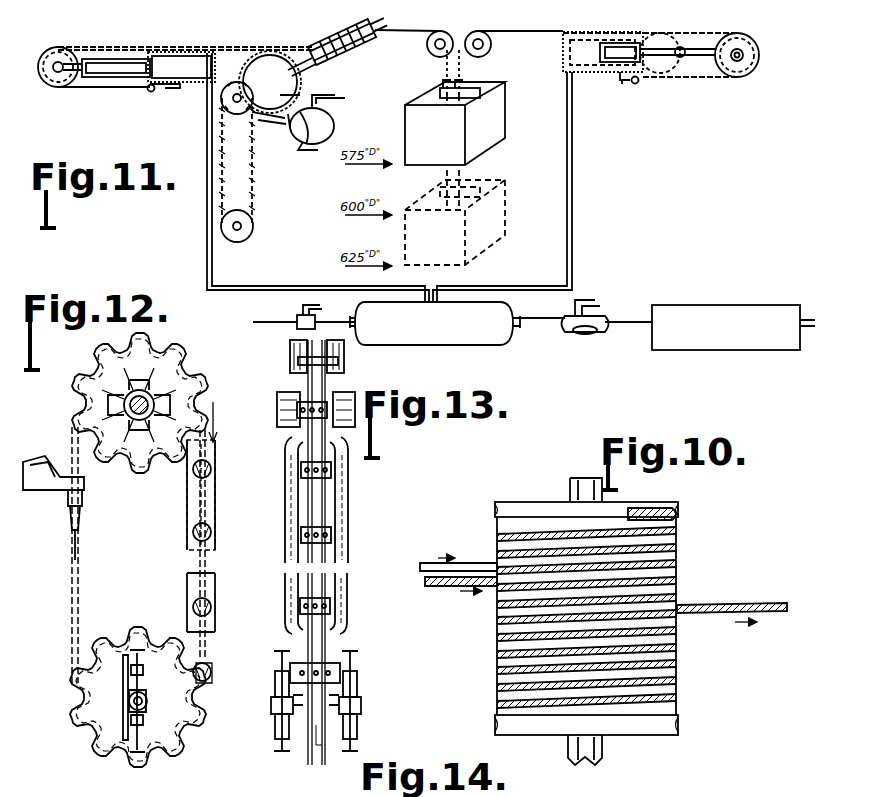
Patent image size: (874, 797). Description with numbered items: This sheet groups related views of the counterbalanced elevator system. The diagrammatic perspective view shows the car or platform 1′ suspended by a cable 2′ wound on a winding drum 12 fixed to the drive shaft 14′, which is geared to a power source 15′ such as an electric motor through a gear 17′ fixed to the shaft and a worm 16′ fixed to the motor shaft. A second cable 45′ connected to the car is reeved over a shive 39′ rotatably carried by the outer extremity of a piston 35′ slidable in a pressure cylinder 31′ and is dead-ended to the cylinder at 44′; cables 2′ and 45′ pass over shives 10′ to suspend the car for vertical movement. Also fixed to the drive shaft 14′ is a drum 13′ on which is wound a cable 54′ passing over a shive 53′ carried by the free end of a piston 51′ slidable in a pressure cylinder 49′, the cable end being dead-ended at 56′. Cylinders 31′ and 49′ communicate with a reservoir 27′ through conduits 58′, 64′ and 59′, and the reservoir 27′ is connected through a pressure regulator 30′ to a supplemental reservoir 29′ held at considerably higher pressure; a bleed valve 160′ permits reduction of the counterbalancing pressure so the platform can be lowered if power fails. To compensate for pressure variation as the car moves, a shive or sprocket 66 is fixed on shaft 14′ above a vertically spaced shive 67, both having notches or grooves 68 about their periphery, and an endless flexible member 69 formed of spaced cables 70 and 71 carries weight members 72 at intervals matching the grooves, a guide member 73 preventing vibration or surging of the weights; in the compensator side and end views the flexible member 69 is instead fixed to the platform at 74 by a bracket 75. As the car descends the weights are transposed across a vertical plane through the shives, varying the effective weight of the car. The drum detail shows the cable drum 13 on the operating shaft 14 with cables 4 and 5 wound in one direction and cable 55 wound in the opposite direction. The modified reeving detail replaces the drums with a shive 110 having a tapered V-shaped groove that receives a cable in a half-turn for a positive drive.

In FIG. 11, the car or platform 1′ is at (490, 108).
In FIG. 11, the cable 2′ is at (432, 33).
In FIG. 11, the shives 10′ is at (470, 30).
In FIG. 11, the winding drum 12 is at (362, 27).
In FIG. 11, the drum 13′ is at (320, 55).
In FIG. 11, the drive shaft 14′ is at (370, 40).
In FIG. 11, the power source 15′ is at (325, 134).
In FIG. 11, the worm 16′ is at (284, 126).
In FIG. 11, the gear 17′ is at (261, 80).
In FIG. 11, the reservoir 27′ is at (418, 332).
In FIG. 11, the supplemental reservoir 29′ is at (733, 327).
In FIG. 11, the pressure regulator 30′ is at (584, 334).
In FIG. 11, the pressure cylinder 31′ is at (612, 32).
In FIG. 11, the piston 35′ is at (650, 64).
In FIG. 11, the shive 39′ is at (745, 36).
In FIG. 11, the cable fixing point 44′ is at (631, 84).
In FIG. 11, the cable 45′ is at (532, 32).
In FIG. 11, the pressure cylinder 49′ is at (184, 84).
In FIG. 11, the piston 51′ is at (137, 78).
In FIG. 11, the shive 53′ is at (60, 48).
In FIG. 11, the cable 54′ is at (138, 47).
In FIG. 11, the cable fixing point 56′ is at (155, 92).
In FIG. 11, the conduit 58′ is at (572, 204).
In FIG. 11, the conduit 59′ is at (284, 287).
In FIG. 11, the conduit 64′ is at (207, 210).
In FIG. 11, the shive or sprocket 66 is at (226, 125).
In FIG. 12, the shive or sprocket 66 is at (145, 372).
In FIG. 11, the shive 67 is at (256, 214).
In FIG. 12, the shive 67 is at (100, 658).
In FIG. 14, the shive 67 is at (330, 748).
In FIG. 11, the notches or grooves 68 is at (238, 242).
In FIG. 12, the notches or grooves 68 is at (86, 372).
In FIG. 13, the notches or grooves 68 is at (302, 380).
In FIG. 14, the notches or grooves 68 is at (330, 647).
In FIG. 11, the endless flexible member 69 is at (252, 150).
In FIG. 12, the endless flexible member 69 is at (77, 600).
In FIG. 11, the cable 70 is at (256, 206).
In FIG. 13, the cable 70 is at (316, 507).
In FIG. 11, the cable 71 is at (256, 196).
In FIG. 13, the cable 71 is at (322, 520).
In FIG. 11, the weight members 72 is at (222, 152).
In FIG. 12, the weight members 72 is at (212, 532).
In FIG. 13, the weight members 72 is at (333, 470).
In FIG. 12, the guide member 73 is at (216, 548).
In FIG. 13, the guide member 73 is at (287, 547).
In FIG. 12, the fixing point 74 is at (83, 500).
In FIG. 12, the bracket 75 is at (48, 464).
In FIG. 12, the shive 110 is at (95, 786).
In FIG. 11, the bleed valve 160′ is at (297, 317).
In FIG. 10, the cable 4 is at (466, 564).
In FIG. 10, the cable 5 is at (778, 606).
In FIG. 10, the winding drum 13 is at (545, 520).
In FIG. 10, the operating shaft 14 is at (603, 757).
In FIG. 10, the cable 55 is at (680, 516).